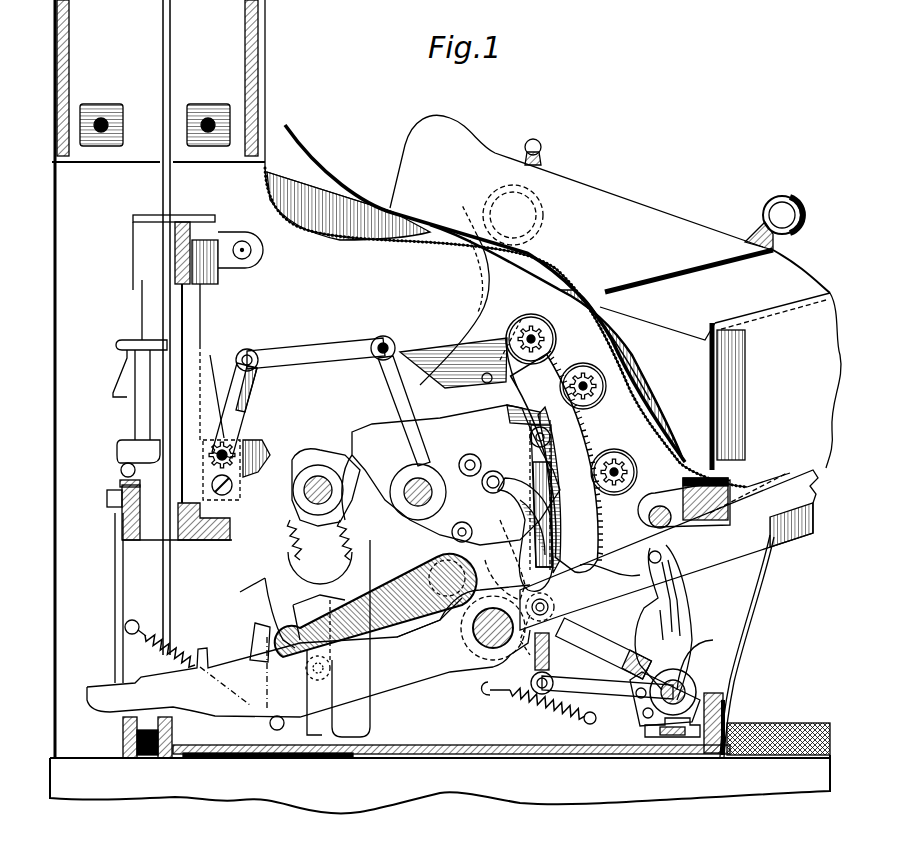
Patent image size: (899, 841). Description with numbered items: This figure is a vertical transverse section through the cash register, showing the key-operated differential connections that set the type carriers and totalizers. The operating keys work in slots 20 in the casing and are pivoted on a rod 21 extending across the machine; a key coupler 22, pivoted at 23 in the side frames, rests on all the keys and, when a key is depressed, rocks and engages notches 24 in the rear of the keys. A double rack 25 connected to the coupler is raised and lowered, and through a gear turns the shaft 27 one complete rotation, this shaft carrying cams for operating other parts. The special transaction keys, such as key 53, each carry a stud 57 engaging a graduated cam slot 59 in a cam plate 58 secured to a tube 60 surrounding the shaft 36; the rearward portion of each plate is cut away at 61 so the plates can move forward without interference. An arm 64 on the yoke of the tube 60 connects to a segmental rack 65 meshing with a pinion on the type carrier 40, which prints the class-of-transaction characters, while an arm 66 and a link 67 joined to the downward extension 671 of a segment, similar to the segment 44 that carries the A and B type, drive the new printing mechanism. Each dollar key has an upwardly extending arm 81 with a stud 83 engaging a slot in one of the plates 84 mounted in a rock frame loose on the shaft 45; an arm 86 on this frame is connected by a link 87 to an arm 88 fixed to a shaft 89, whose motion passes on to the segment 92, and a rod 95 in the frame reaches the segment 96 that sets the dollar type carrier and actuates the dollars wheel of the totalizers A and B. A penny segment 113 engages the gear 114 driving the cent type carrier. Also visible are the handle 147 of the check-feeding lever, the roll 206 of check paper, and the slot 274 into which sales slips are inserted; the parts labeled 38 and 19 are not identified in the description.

The roll of paper 206 is at (328, 135).
The gear 114 is at (543, 222).
The segment 44 is at (548, 270).
The segment 113 is at (498, 276).
The operating handle 147 is at (778, 205).
The slot 274 is at (700, 262).
The type carrier 40 is at (556, 339).
The segmental rack 65 is at (518, 352).
The totalizer A is at (598, 388).
The totalizer B is at (636, 472).
The segment 96 is at (590, 437).
The link 67 is at (552, 448).
The arm 88 is at (237, 376).
The link 87 is at (354, 350).
The segment 92 is at (405, 350).
The downward extension 671 is at (485, 376).
The shaft 89 is at (218, 449).
The arm 86 is at (387, 386).
The stud 83 is at (495, 475).
The plates 84 is at (528, 534).
The upwardly extending arm 81 is at (497, 528).
The shaft 27 is at (318, 505).
The shaft 45 is at (420, 508).
The rod 95 is at (347, 547).
The double rack 25 is at (327, 607).
The key coupler 22 is at (420, 575).
The pivot 23 is at (447, 600).
The rod 21 is at (488, 649).
The pin 38 is at (550, 605).
The notches 24 is at (256, 642).
The key 53 is at (802, 481).
The stud 57 is at (650, 553).
The cut away 61 is at (628, 572).
The cam plate 58 is at (690, 634).
The cam slot 59 is at (674, 602).
The slots 20 is at (757, 581).
The tube 60 is at (713, 640).
The arm 64 is at (598, 655).
The arm 66 is at (578, 698).
The shaft 36 is at (685, 683).
The base bracket 19 is at (655, 728).